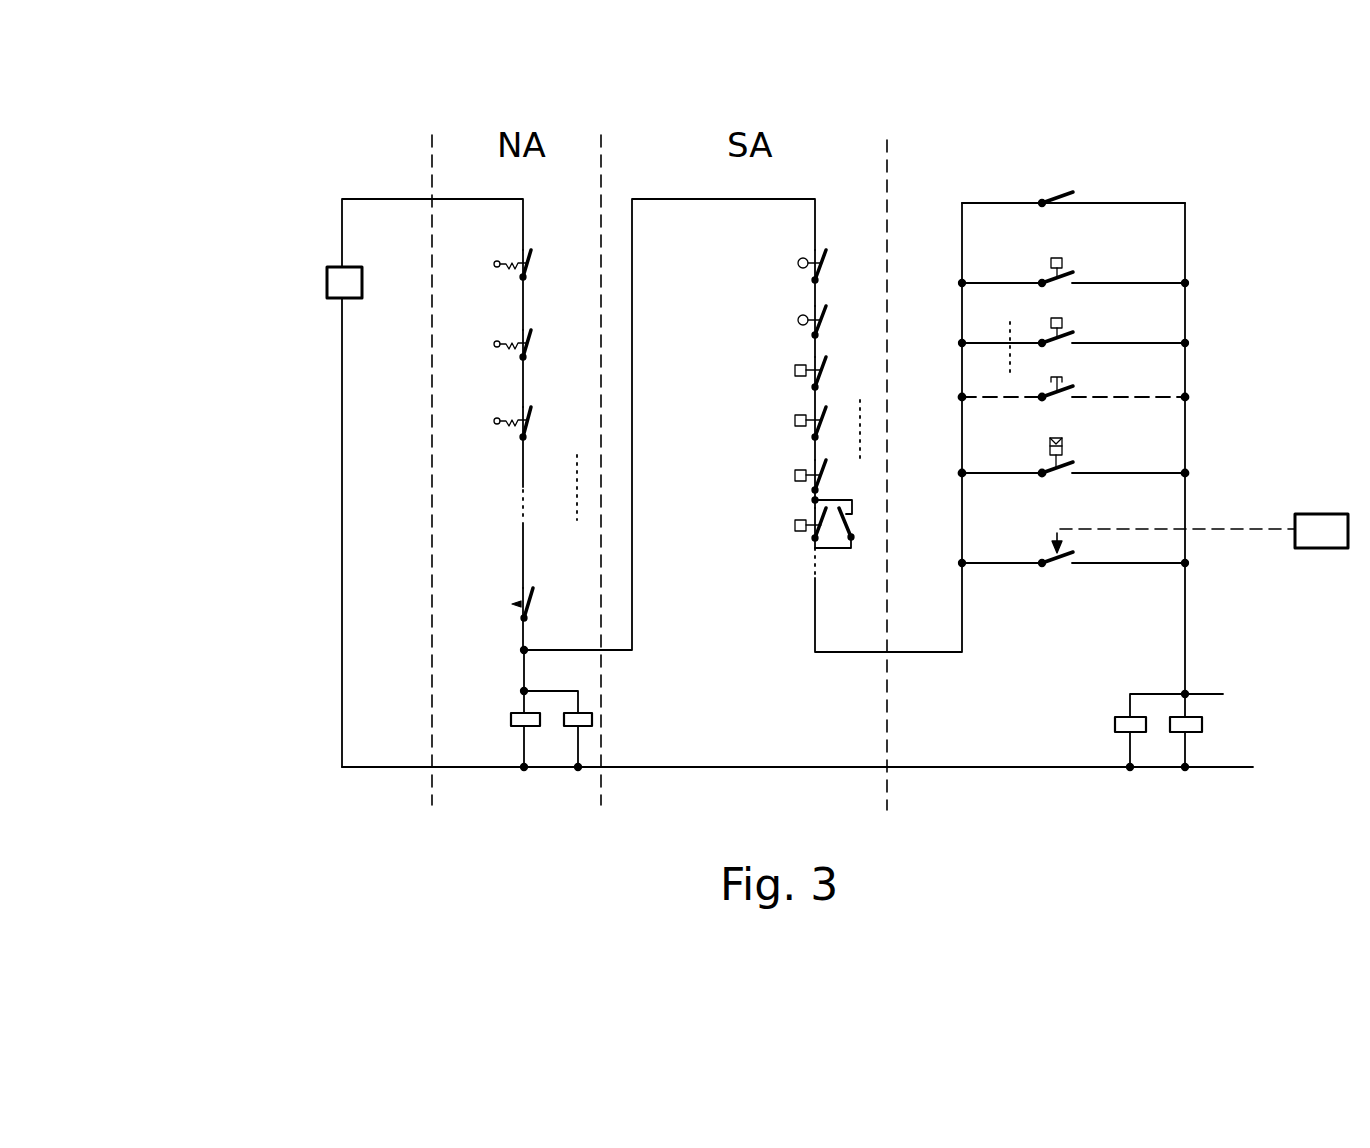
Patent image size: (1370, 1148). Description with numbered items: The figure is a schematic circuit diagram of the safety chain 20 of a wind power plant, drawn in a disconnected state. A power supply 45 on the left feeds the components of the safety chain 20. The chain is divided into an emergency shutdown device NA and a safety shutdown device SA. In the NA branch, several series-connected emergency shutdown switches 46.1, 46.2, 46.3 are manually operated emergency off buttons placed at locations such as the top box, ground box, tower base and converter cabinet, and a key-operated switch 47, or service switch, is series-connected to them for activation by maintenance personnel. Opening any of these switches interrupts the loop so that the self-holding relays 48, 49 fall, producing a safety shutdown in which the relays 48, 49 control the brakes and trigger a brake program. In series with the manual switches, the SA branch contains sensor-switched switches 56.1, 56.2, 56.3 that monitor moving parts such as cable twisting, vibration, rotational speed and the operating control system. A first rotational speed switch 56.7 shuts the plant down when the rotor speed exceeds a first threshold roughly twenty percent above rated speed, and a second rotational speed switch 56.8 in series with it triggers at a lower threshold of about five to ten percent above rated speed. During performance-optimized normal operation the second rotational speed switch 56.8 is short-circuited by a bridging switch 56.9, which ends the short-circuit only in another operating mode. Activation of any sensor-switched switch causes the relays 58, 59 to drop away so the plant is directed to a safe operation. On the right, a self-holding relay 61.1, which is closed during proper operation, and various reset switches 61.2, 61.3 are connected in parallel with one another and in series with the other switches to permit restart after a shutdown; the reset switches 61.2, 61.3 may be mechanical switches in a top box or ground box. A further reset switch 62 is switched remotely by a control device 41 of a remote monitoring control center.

The safety chain 20 is at (215, 250).
The control device 41 is at (1312, 520).
The power supply 45 is at (327, 283).
The emergency shutdown switch 46.1 is at (526, 277).
The emergency shutdown switch 46.2 is at (526, 357).
The emergency shutdown switch 46.3 is at (526, 437).
The key-operated switch 47 is at (528, 604).
The relay 48 is at (516, 712).
The relay 49 is at (586, 714).
The switch of the safety shutdown device 56.1 is at (819, 278).
The switch of the safety shutdown device 56.2 is at (819, 333).
The switch of the safety shutdown device 56.3 is at (819, 385).
The first rotational speed switch 56.7 is at (813, 488).
The second rotational speed switch 56.8 is at (813, 537).
The bridging switch 56.9 is at (855, 528).
The relay 58 is at (1124, 716).
The relay 59 is at (1202, 722).
The self-holding relay 61.1 is at (1061, 192).
The reset switch 61.2 is at (1046, 279).
The reset switch 61.3 is at (1046, 339).
The reset switch 62 is at (1052, 551).